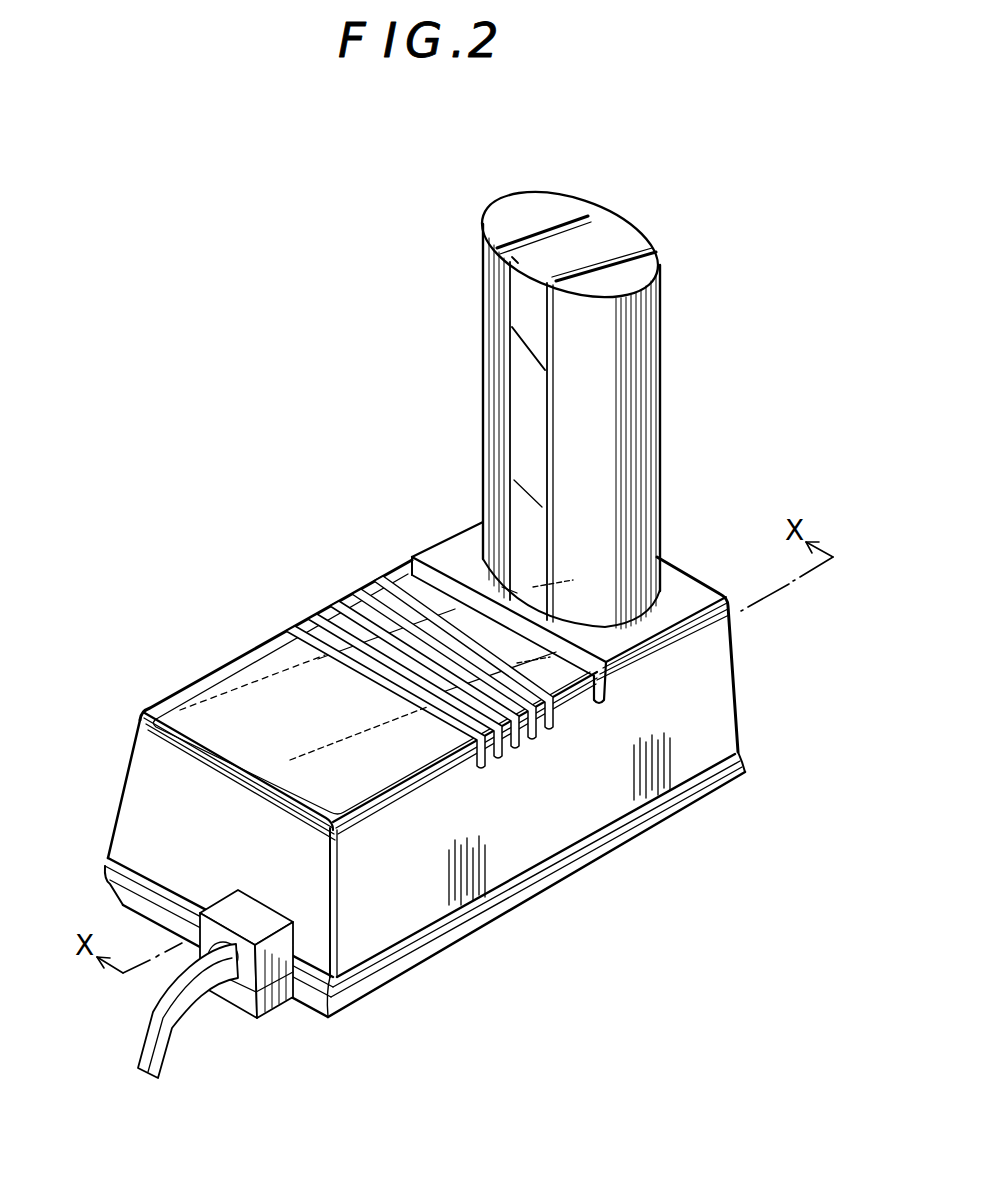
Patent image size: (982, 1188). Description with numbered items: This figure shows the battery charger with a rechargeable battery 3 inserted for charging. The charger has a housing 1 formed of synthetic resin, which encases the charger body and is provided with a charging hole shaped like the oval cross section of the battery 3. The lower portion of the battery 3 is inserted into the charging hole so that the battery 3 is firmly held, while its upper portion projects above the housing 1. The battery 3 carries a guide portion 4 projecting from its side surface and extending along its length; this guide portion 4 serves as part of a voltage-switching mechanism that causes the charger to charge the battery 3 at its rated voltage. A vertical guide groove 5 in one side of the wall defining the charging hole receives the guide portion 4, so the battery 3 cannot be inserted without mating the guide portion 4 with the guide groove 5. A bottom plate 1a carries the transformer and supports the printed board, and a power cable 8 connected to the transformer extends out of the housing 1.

The housing 1 is at (237, 676).
The bottom plate 1a is at (560, 878).
The rechargeable battery 3 is at (627, 425).
The guide portion 4 is at (520, 400).
The guide groove 5 is at (524, 593).
The power cable 8 is at (190, 1007).